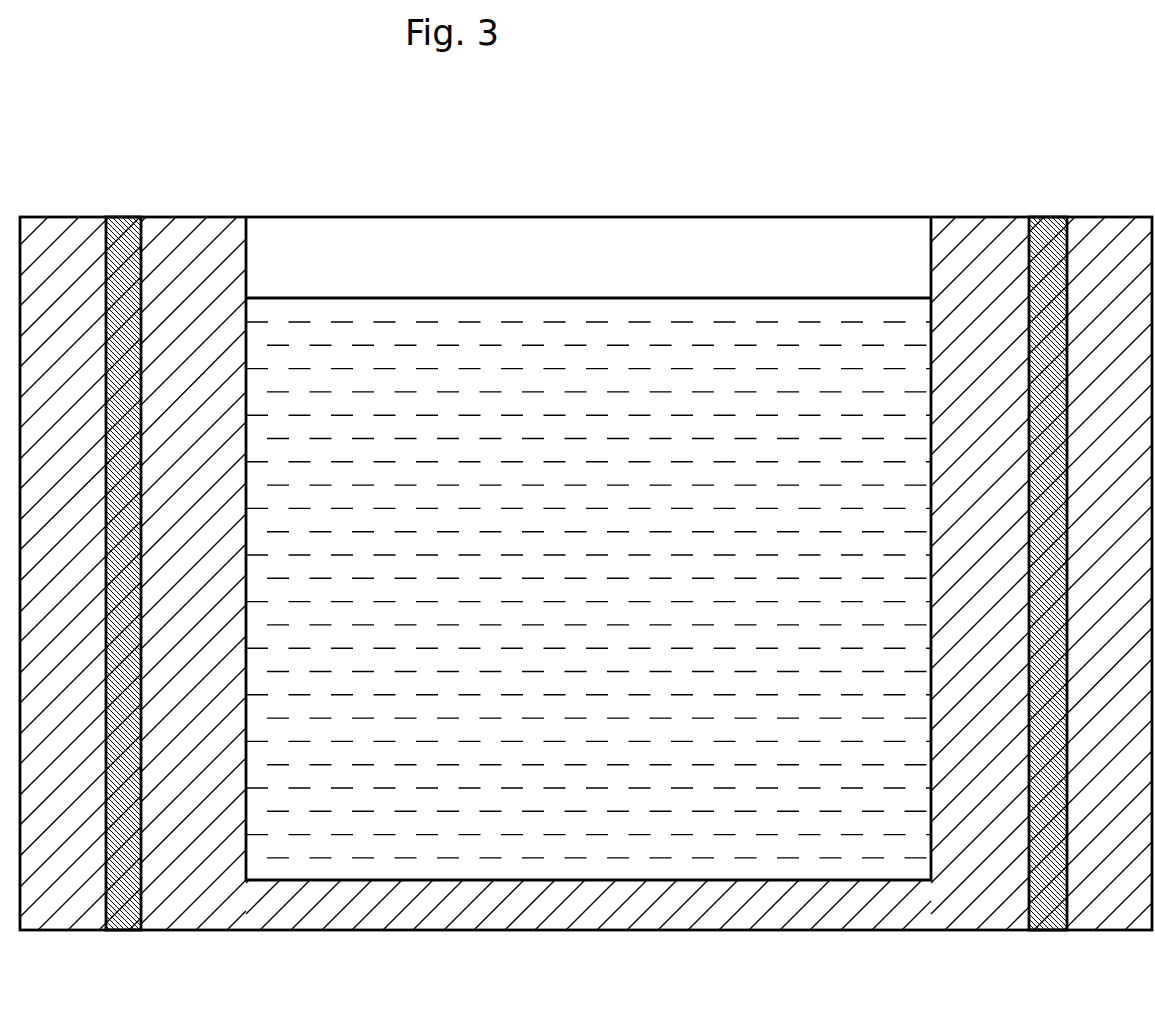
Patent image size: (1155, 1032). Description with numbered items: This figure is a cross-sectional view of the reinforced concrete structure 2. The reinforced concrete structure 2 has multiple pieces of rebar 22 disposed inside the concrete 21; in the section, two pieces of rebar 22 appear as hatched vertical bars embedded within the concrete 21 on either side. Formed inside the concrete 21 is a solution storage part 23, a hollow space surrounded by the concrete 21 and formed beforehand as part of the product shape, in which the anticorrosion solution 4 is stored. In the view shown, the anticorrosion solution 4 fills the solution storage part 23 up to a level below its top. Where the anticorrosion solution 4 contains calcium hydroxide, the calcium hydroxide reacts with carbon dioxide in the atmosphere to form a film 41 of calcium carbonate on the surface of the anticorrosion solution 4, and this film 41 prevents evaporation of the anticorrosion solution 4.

The reinforced concrete structure 2 is at (667, 188).
The concrete 21 is at (973, 228).
The rebar 22 is at (130, 217).
The solution storage part 23 is at (450, 217).
The anticorrosion solution 4 is at (600, 353).
The film 41 is at (747, 298).